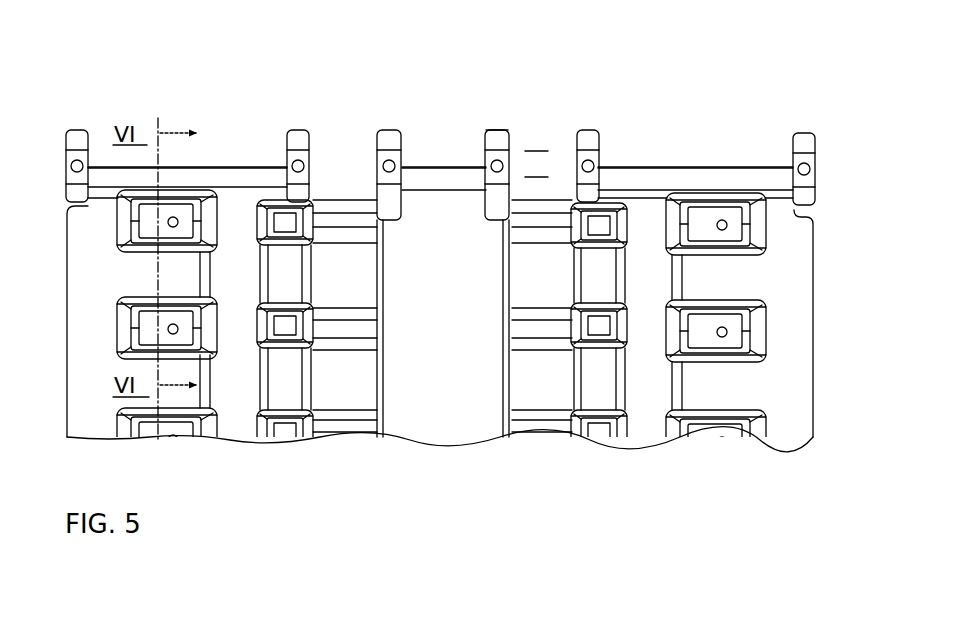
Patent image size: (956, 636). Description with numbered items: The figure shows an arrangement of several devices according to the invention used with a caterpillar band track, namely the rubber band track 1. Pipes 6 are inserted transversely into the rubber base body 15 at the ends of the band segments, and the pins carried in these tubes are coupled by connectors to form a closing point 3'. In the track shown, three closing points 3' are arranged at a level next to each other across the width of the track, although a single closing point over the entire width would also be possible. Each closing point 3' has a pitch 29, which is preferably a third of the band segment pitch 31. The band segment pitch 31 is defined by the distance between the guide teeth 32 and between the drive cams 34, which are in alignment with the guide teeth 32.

The rubber band track 1 is at (492, 96).
The closing point 3' is at (440, 113).
The pipe 6 is at (236, 165).
The rubber base body 15 is at (799, 283).
The pitch 29 is at (537, 203).
The band segment pitch 31 is at (405, 225).
The guide tooth 32 is at (127, 233).
The drive cam 34 is at (310, 330).